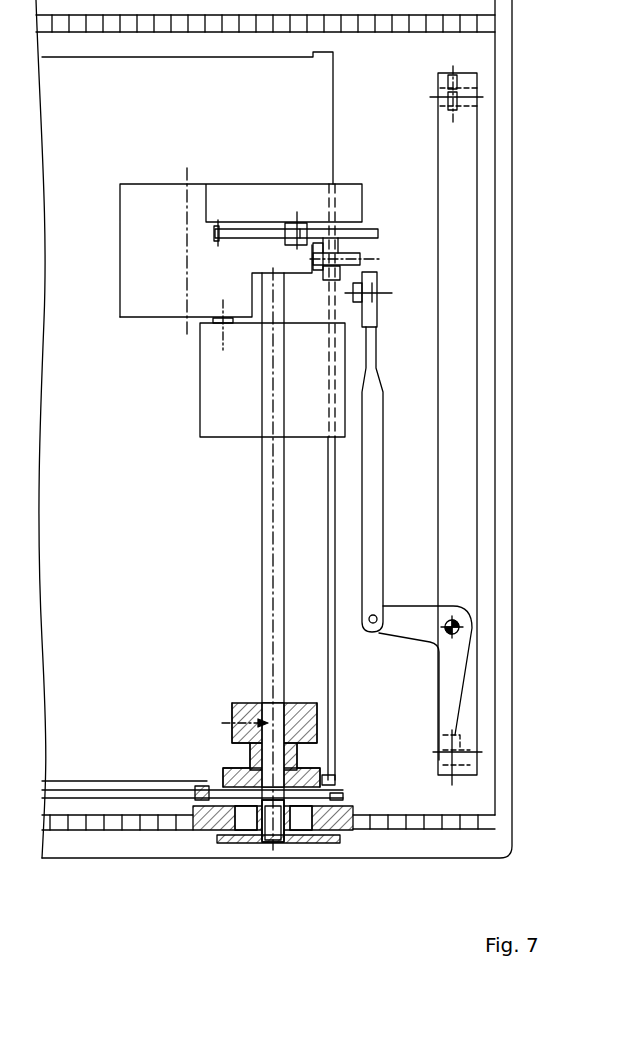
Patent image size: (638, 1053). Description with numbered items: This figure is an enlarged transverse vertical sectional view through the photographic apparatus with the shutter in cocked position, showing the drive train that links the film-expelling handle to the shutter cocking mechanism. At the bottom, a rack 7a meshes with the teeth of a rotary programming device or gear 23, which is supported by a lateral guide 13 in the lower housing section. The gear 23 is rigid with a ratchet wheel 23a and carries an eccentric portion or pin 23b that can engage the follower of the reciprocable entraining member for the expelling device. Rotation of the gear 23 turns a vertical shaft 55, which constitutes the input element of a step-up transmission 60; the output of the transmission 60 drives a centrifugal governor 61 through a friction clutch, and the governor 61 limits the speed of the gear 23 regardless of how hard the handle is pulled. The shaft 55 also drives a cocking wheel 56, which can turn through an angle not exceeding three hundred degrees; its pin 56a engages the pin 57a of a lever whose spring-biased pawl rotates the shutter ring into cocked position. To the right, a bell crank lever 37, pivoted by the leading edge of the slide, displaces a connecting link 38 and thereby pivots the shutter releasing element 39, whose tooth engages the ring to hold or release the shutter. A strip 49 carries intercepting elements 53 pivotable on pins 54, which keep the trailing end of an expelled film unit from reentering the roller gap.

The rack 7a is at (130, 822).
The lateral guide 13 is at (238, 845).
The rotary programming device 23 is at (332, 838).
The ratchet wheel 23a is at (232, 762).
The eccentric pin 23b is at (200, 790).
The bell crank lever 37 is at (450, 687).
The connecting link 38 is at (373, 478).
The shutter releasing element 39 is at (375, 313).
The strip 49 is at (463, 183).
The intercepting element 53 is at (443, 102).
The pin 54 is at (452, 82).
The shaft 55 is at (270, 562).
The cocking wheel 56 is at (357, 232).
The pin 56a is at (328, 280).
The pin 57a is at (355, 252).
The step-up transmission 60 is at (143, 208).
The centrifugal governor 61 is at (215, 402).